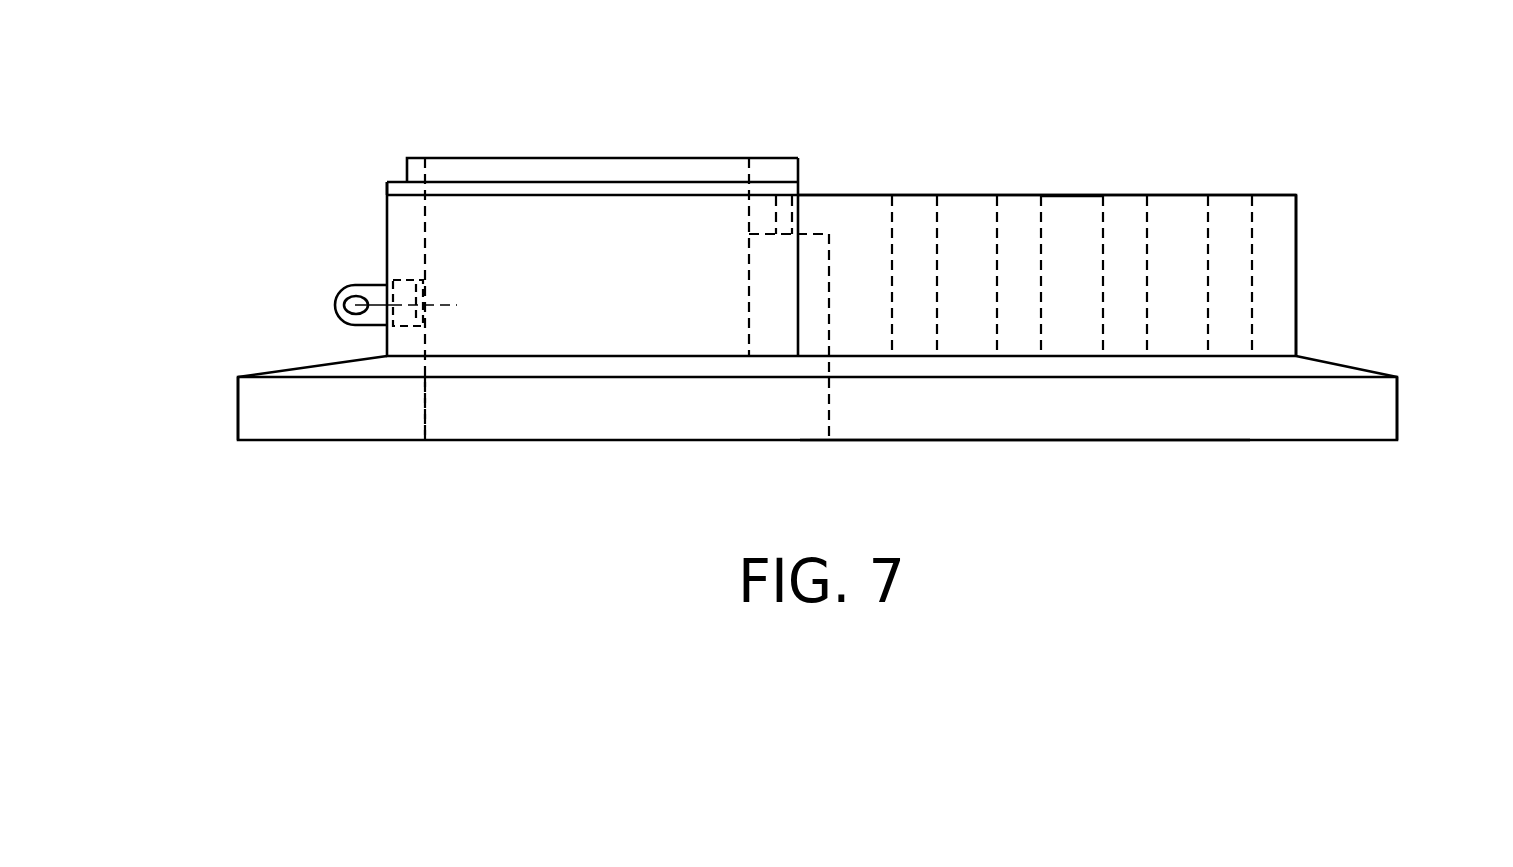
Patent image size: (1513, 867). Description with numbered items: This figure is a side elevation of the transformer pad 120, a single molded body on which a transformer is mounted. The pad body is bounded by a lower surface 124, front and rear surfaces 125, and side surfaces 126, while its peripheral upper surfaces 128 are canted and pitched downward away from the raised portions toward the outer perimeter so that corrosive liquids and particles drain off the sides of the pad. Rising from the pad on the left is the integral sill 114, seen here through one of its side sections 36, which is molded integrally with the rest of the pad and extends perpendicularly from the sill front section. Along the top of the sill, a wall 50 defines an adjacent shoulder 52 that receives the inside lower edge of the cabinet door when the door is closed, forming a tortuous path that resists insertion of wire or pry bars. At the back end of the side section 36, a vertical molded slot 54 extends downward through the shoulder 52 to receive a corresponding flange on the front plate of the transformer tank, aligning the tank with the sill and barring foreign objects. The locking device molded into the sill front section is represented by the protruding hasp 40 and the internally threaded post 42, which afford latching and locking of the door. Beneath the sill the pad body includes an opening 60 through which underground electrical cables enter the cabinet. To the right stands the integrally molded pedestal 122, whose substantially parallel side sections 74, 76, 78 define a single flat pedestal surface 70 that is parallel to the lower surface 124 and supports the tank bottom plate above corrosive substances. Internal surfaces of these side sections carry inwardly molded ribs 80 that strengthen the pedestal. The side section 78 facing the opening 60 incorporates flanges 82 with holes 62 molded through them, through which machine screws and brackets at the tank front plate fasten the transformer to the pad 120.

The side section 36 is at (606, 222).
The protruding hasp 40 is at (335, 302).
The internally threaded post 42 is at (405, 285).
The wall 50 is at (552, 158).
The shoulder 52 is at (397, 182).
The vertical molded slot 54 is at (749, 176).
The opening 60 is at (428, 410).
The hole 62 is at (783, 192).
The pedestal surface 70 is at (1079, 193).
The pedestal side section 74 is at (1296, 250).
The pedestal side section 76 is at (1178, 215).
The pedestal side section 78 is at (829, 297).
The inwardly molded ribs 80 is at (1018, 205).
The flange 82 is at (760, 220).
The integral sill 114 is at (386, 181).
The transformer pad 120 is at (638, 440).
The pedestal 122 is at (1295, 194).
The lower surface 124 is at (915, 440).
The front and rear surfaces 125 is at (238, 404).
The side surfaces 126 is at (1125, 432).
The upper surfaces 128 is at (283, 372).